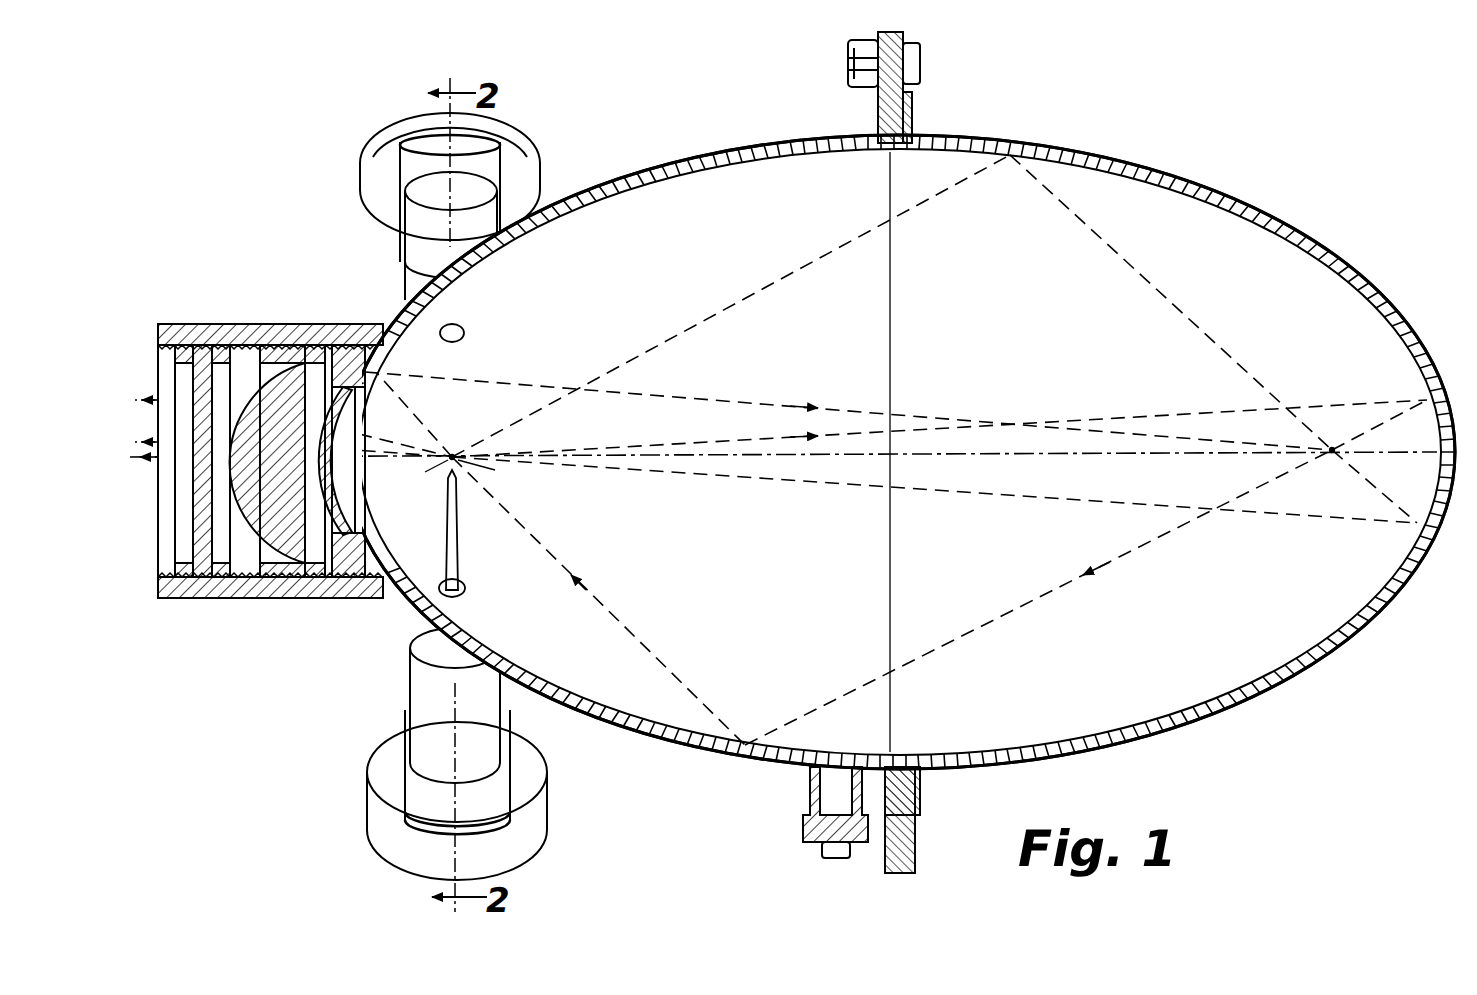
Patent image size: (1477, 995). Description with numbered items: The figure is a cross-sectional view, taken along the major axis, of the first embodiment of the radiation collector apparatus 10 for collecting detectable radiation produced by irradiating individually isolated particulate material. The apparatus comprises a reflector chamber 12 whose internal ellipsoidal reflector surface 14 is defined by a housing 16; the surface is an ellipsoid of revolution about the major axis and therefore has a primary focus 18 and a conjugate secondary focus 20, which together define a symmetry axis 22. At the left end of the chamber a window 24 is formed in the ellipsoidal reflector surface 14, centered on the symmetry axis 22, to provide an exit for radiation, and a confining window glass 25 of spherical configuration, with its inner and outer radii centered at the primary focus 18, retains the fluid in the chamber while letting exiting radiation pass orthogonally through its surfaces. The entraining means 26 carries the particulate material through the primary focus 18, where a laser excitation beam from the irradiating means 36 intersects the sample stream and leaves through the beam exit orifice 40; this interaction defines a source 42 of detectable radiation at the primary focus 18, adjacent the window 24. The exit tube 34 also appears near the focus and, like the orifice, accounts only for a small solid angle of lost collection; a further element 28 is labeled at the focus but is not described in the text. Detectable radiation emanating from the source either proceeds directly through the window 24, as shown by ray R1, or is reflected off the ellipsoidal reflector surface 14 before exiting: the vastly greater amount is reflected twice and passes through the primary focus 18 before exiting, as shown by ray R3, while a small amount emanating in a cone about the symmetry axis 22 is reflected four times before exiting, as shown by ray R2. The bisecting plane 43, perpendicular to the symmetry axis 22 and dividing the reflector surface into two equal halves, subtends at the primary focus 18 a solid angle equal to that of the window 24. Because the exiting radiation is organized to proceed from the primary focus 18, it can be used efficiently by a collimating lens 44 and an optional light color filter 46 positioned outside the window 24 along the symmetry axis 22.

The radiation collector apparatus 10 is at (742, 135).
The reflector chamber 12 is at (775, 168).
The ellipsoidal reflector surface 14 is at (668, 186).
The housing 16 is at (838, 144).
The primary focus 18 is at (453, 453).
The secondary focus 20 is at (1332, 448).
The symmetry axis 22 is at (1032, 455).
The window 24 is at (366, 503).
The window glass 25 is at (346, 426).
The entraining means 26 is at (410, 685).
The ray bundle at focal point 28 is at (486, 475).
The exit tube 34 is at (459, 558).
The irradiating means 36 is at (402, 247).
The beam exit orifice 40 is at (460, 332).
The source of detectable radiation 42 is at (424, 475).
The bisecting plane 43 is at (893, 306).
The collimating lens 44 is at (292, 382).
The light color filter 46 is at (205, 360).
The ray R1 is at (150, 398).
The ray R2 is at (773, 406).
The ray R3 is at (742, 292).